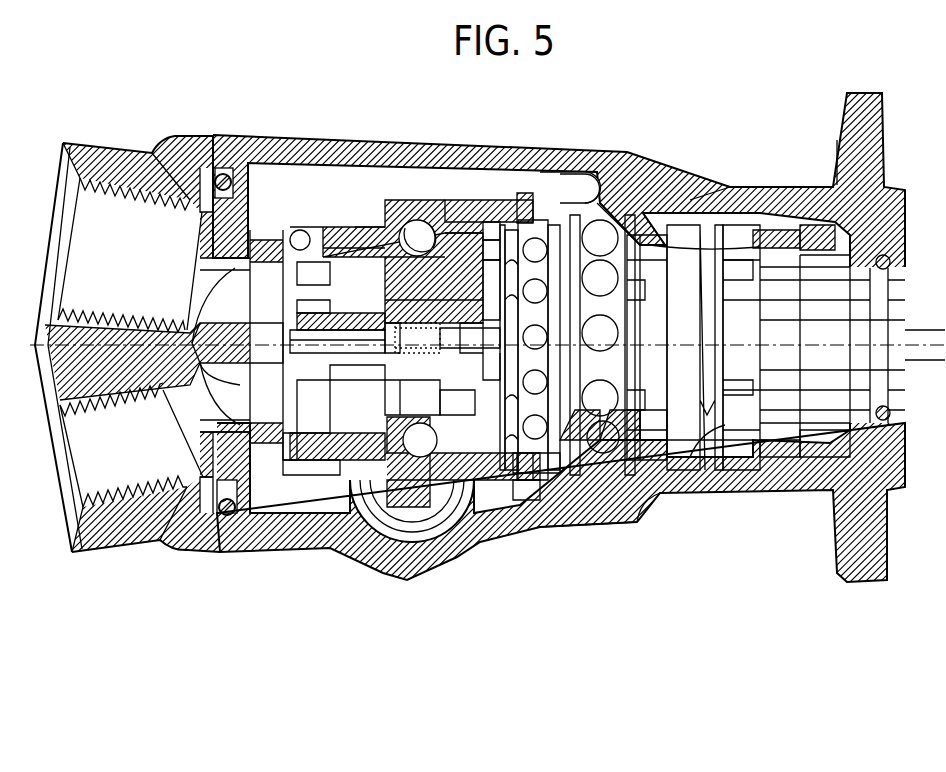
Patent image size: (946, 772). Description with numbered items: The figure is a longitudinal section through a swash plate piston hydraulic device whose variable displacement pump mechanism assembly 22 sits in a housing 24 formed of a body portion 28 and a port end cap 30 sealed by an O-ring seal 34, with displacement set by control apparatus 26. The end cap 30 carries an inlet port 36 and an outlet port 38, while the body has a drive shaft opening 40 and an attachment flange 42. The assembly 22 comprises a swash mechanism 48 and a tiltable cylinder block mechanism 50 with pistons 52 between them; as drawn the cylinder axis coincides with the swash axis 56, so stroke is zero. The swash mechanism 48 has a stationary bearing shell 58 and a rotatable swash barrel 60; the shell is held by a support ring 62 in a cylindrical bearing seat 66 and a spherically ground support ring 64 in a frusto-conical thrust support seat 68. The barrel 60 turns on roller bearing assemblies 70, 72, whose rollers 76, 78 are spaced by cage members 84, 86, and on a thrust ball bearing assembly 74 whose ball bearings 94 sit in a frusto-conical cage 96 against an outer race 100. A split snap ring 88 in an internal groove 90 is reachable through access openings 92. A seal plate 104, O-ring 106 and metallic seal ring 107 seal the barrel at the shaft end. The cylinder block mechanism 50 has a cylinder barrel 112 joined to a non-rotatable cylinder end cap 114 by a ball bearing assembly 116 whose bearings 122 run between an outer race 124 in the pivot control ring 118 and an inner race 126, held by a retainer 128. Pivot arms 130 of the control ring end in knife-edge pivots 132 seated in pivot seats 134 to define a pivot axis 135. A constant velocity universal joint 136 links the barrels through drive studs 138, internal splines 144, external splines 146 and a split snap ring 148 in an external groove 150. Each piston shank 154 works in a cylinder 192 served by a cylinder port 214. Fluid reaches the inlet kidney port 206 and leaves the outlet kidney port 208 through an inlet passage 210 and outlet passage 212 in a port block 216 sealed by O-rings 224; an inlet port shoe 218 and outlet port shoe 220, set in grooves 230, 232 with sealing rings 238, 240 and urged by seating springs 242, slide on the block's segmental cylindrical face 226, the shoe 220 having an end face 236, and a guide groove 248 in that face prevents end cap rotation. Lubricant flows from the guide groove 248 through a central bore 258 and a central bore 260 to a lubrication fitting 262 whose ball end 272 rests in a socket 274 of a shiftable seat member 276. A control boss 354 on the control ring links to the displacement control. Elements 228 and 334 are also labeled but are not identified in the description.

The variable displacement pump mechanism assembly 22 is at (728, 180).
The housing 24 is at (303, 145).
The control apparatus 26 is at (385, 560).
The body portion 28 is at (580, 530).
The port end cap portion 30 is at (188, 538).
The O-ring seal 34 is at (226, 516).
The inlet port 36 is at (80, 222).
The outlet port 38 is at (80, 438).
The drive shaft opening 40 is at (898, 297).
The attachment flange 42 is at (878, 112).
The swash mechanism 48 is at (585, 445).
The tiltable cylinder block mechanism 50 is at (360, 210).
The pistons 52 is at (527, 368).
The axis of the swash mechanism 56 is at (942, 330).
The bearing shell 58 is at (655, 487).
The swash barrel 60 is at (580, 190).
The support ring 62 is at (835, 265).
The thrust support ring 64 is at (625, 440).
The cylindrical bearing seat 66 is at (815, 445).
The frusto-conical thrust support seat 68 is at (668, 475).
The roller bearing assembly 70 is at (790, 425).
The roller bearing assembly 72 is at (650, 450).
The thrust ball bearing assembly 74 is at (605, 230).
The anti-friction rollers 76 is at (760, 375).
The anti-friction rollers 78 is at (655, 380).
The roller bearing cage 84 is at (725, 334).
The roller bearing cage 86 is at (672, 309).
The split snap ring 88 is at (720, 232).
The internal annular groove 90 is at (770, 228).
The access openings 92 is at (716, 228).
The ball bearings 94 is at (598, 290).
The frusto-conical cage 96 is at (598, 392).
The outer race 100 is at (640, 228).
The seal plate 104 is at (862, 318).
The O-ring 106 is at (890, 413).
The metallic seal ring 107 is at (893, 225).
The cylinder barrel 112 is at (420, 225).
The cylinder end cap 114 is at (338, 222).
The ball bearing assembly 116 is at (408, 228).
The pivot control ring 118 is at (440, 253).
The anti-friction bearings 122 is at (413, 275).
The outer bearing race 124 is at (429, 451).
The inner bearing race 126 is at (446, 263).
The bearing cage 128 is at (367, 234).
The pivot arms 130 is at (475, 205).
The knife-edge pivots 132 is at (555, 255).
The pivot seats 134 is at (520, 198).
The pivot axis 135 is at (540, 465).
The constant velocity universal joint 136 is at (525, 490).
The external drive studs 138 is at (540, 335).
The internal splines 144 is at (474, 500).
The external splines 146 is at (470, 246).
The split snap ring 148 is at (454, 402).
The external groove 150 is at (477, 290).
The piston rod 154 is at (468, 232).
The cylinders 192 is at (500, 360).
The inlet kidney port 206 is at (337, 342).
The outlet kidney port 208 is at (392, 462).
The inlet passage 210 is at (262, 275).
The outlet passage 212 is at (218, 440).
The cylinder ports 214 is at (368, 375).
The port block 216 is at (246, 460).
The inlet port shoe 218 is at (312, 279).
The outlet port shoe 220 is at (280, 400).
The O-rings 224 is at (240, 264).
The segmental cylindrical face 226 is at (284, 445).
The seal 228 is at (353, 250).
The groove 230 is at (305, 238).
The groove 232 is at (305, 472).
The segmental cylindrical end face 236 is at (283, 418).
The sealing ring 238 is at (313, 307).
The sealing ring 240 is at (372, 380).
The seating springs 242 is at (340, 290).
The guide groove 248 is at (258, 346).
The central bore 258 is at (270, 372).
The central bore 260 is at (398, 327).
The lubrication fitting 262 is at (463, 327).
The universal ball end 272 is at (435, 340).
The mating socket 274 is at (423, 397).
The shiftable seat member 276 is at (434, 300).
The passage 334 is at (265, 325).
The control boss 354 is at (398, 535).